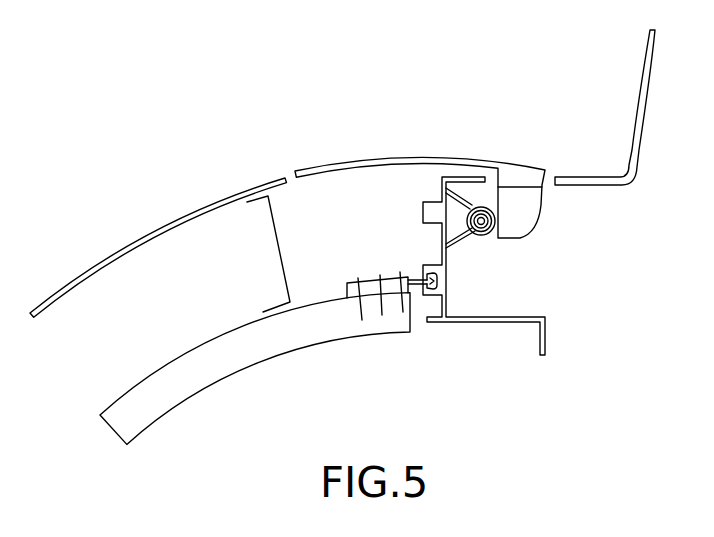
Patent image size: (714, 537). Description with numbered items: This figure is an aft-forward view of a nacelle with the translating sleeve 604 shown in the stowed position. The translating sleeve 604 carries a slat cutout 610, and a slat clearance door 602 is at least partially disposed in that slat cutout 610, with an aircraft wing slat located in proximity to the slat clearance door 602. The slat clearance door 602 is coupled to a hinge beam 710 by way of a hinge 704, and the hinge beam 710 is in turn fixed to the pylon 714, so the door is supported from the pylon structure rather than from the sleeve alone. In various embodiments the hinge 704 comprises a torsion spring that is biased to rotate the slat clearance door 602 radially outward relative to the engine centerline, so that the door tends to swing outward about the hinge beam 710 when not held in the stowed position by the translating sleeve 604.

The slat clearance door 602 is at (468, 158).
The translating sleeve 604 is at (222, 193).
The slat cutout 610 is at (305, 185).
The hinge 704 is at (488, 223).
The hinge beam 710 is at (453, 290).
The pylon 714 is at (640, 52).